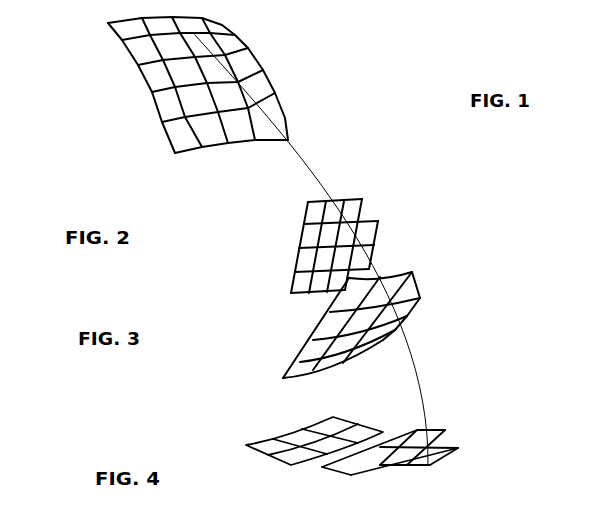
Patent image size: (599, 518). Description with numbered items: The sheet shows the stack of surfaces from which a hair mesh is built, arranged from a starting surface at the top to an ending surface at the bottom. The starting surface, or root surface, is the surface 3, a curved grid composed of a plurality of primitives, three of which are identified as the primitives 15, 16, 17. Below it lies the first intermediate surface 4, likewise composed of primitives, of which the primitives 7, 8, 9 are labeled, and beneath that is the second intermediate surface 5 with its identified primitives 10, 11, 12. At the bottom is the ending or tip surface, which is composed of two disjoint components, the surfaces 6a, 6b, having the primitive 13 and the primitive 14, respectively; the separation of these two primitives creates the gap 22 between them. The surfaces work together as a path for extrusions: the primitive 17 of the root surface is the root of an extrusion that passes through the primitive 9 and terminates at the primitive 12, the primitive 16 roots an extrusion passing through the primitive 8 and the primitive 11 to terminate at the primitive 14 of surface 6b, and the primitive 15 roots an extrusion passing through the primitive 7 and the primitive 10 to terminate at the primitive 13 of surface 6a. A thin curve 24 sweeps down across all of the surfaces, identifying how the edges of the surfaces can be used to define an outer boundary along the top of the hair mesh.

In FIG. 1, the surface 3 is at (123, 73).
In FIG. 1, the primitive 17 is at (167, 47).
In FIG. 1, the primitive 16 is at (174, 72).
In FIG. 1, the primitive 15 is at (197, 111).
In FIG. 1, the curve 24 is at (311, 152).
In FIG. 2, the first intermediate surface 4 is at (373, 200).
In FIG. 2, the primitive 9 is at (313, 212).
In FIG. 2, the primitive 8 is at (312, 237).
In FIG. 2, the primitive 7 is at (305, 259).
In FIG. 3, the surface 5 is at (399, 258).
In FIG. 3, the primitive 12 is at (352, 298).
In FIG. 3, the primitive 11 is at (326, 333).
In FIG. 3, the primitive 10 is at (313, 357).
In FIG. 4, the surface 6a is at (389, 421).
In FIG. 4, the surface 6b is at (390, 452).
In FIG. 4, the primitive 13 is at (283, 457).
In FIG. 4, the gap 22 is at (308, 466).
In FIG. 4, the primitive 14 is at (345, 466).